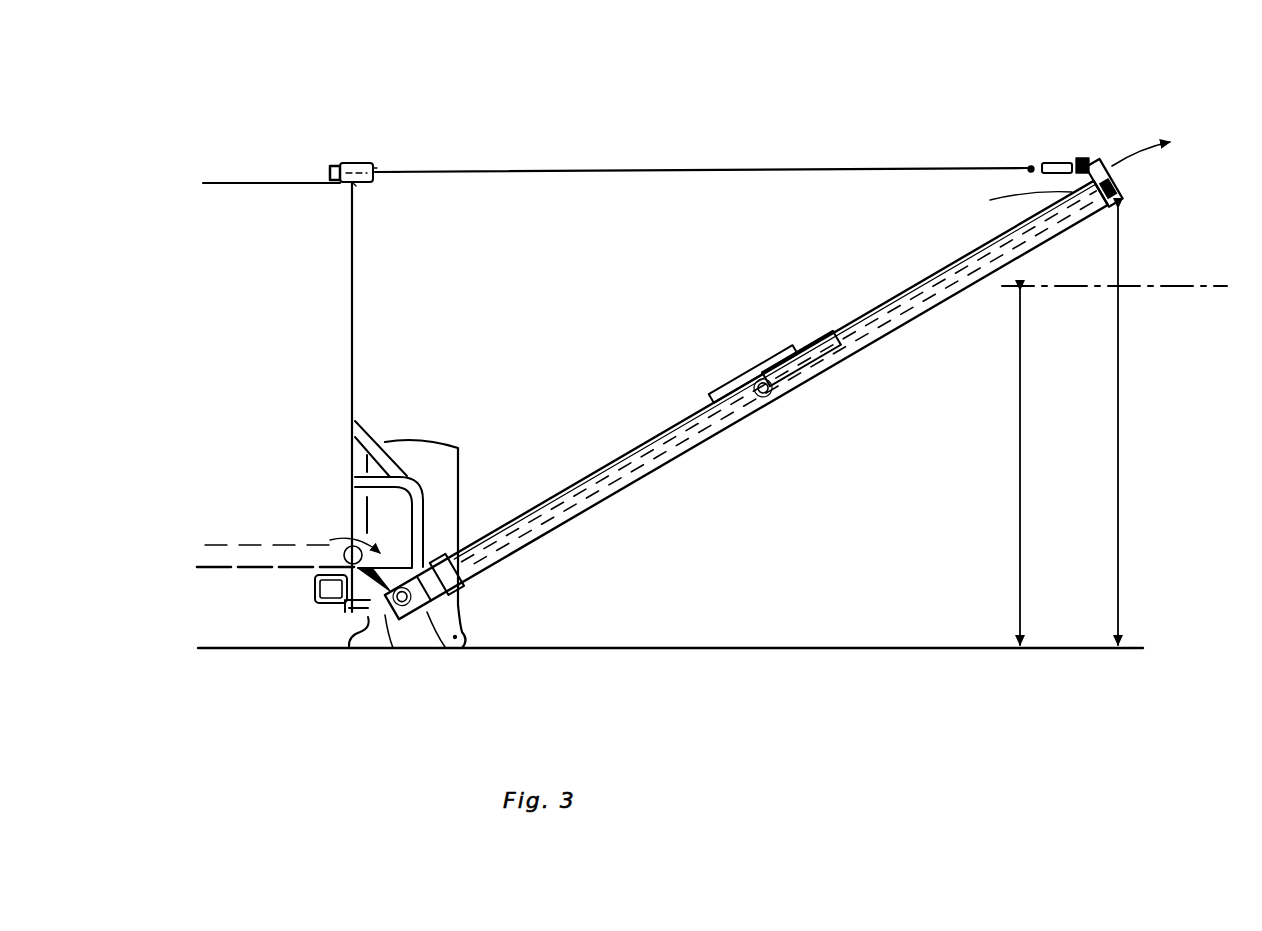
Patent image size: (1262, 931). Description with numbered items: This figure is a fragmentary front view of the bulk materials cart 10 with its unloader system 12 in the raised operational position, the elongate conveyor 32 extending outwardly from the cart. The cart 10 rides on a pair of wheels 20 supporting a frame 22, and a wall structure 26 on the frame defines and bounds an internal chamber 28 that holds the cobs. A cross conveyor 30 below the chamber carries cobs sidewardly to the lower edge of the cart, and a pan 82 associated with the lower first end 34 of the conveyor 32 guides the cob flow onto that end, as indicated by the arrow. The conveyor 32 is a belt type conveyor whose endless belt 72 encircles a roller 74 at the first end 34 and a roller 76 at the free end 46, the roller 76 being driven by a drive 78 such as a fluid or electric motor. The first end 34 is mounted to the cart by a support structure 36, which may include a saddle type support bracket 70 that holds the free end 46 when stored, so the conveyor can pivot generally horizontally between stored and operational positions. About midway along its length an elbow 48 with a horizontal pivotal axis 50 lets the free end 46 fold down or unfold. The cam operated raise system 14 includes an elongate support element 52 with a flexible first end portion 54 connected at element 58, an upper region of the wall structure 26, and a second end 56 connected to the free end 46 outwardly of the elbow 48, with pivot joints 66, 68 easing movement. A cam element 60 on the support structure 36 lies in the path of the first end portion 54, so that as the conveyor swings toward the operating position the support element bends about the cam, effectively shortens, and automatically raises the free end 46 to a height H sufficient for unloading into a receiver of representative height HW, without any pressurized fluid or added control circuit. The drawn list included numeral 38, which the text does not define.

The bulk materials cart 10 is at (233, 178).
The unloader system 12 is at (1140, 198).
The cam operated raise system 14 is at (352, 159).
The wheels 20 is at (458, 448).
The frame 22 is at (315, 590).
The wall structure 26 is at (354, 272).
The internal chamber 28 is at (283, 297).
The cross conveyor 30 is at (262, 545).
The elongate conveyor 32 is at (700, 436).
The lower first end 34 is at (453, 642).
The support structure 36 is at (511, 506).
The discharge pipe 38 is at (423, 524).
The free end 46 is at (1000, 199).
The elbow 48 is at (810, 424).
The horizontal pivotal axis 50 is at (768, 394).
The elongate support element 52 is at (713, 167).
The flexible first end portion 54 is at (400, 172).
The second end 56 is at (1050, 163).
The element of support structure 58 is at (355, 185).
The cam element 60 is at (371, 166).
The pivot joint 66 is at (337, 170).
The pivot joint 68 is at (1086, 160).
The saddle type support bracket 70 is at (350, 622).
The endless belt 72 is at (838, 332).
The roller 74 is at (398, 626).
The roller 76 is at (1128, 188).
The drive 78 is at (1122, 212).
The pan 82 is at (348, 603).
The height H is at (1118, 488).
The receiver height HW is at (1020, 512).